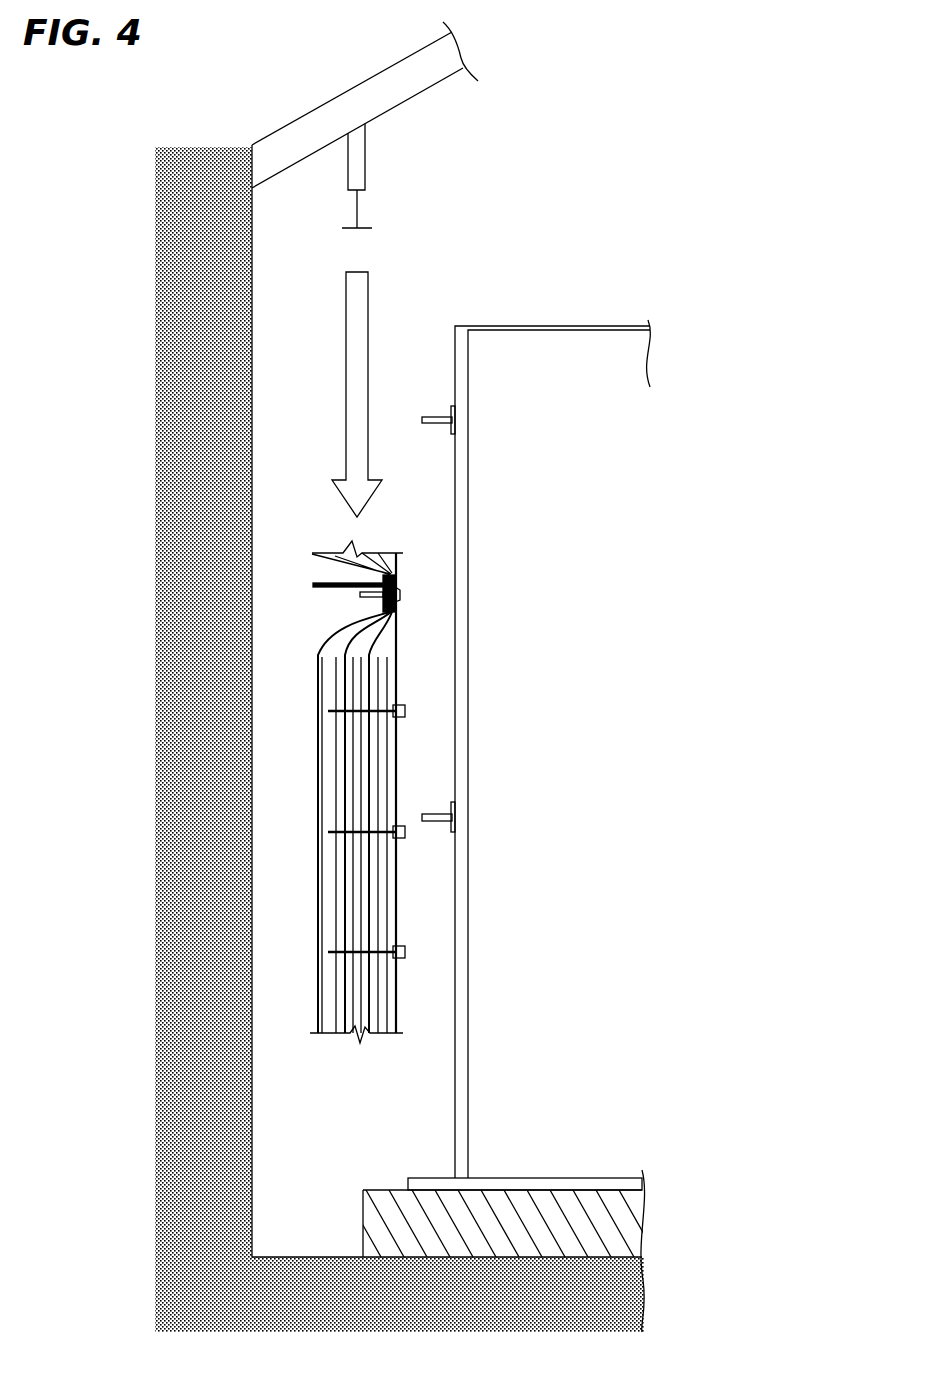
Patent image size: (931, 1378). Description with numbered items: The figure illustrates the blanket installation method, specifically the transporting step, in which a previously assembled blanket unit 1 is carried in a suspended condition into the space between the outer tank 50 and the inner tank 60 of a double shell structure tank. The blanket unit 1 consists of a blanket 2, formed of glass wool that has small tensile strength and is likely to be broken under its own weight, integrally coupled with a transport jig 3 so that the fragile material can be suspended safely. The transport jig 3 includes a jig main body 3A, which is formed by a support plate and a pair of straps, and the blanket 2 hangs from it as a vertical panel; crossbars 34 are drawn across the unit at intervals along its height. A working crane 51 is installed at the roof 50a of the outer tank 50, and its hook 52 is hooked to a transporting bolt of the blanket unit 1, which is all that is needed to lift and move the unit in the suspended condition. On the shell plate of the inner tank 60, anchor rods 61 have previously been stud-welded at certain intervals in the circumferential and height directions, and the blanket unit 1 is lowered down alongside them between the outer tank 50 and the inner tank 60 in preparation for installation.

The blanket unit 1 is at (355, 763).
The blanket 2 is at (342, 900).
The transport jig 3 is at (402, 570).
The jig main body 3A is at (398, 889).
The crossbar 34 is at (330, 712).
The outer tank 50 is at (253, 301).
The roof 50a is at (335, 98).
The working crane 51 is at (367, 173).
The hook 52 is at (367, 227).
The inner tank 60 is at (550, 325).
The anchor rod 61 is at (433, 412).